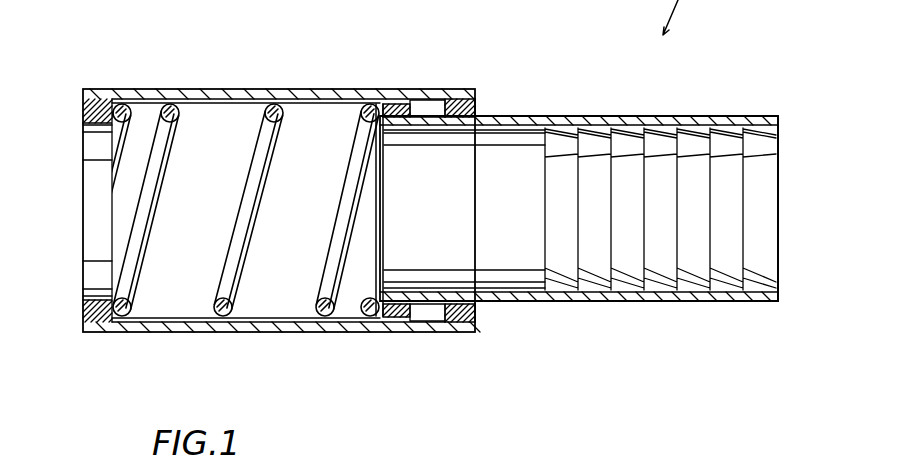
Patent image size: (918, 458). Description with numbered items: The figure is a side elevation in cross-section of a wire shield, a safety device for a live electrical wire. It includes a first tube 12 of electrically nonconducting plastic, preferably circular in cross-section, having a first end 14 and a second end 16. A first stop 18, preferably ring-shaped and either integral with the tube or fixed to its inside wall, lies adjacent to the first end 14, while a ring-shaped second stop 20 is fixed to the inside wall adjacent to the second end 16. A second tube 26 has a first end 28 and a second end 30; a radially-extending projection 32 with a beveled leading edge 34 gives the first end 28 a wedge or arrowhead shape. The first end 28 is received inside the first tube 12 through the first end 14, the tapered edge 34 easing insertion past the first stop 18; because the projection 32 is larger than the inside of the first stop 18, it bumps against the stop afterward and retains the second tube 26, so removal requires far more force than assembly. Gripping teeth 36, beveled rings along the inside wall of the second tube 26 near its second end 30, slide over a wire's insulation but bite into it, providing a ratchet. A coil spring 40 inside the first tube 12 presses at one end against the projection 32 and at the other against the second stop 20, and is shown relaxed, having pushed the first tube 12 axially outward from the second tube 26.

The first tube 12 is at (325, 89).
The first end 14 is at (465, 89).
The second end 16 is at (118, 89).
The first stop 18 is at (475, 110).
The second stop 20 is at (92, 130).
The second tube 26 is at (600, 116).
The first end 28 is at (432, 107).
The second end 30 is at (764, 116).
The radially-extending projection 32 is at (404, 105).
The beveled leading edge 34 is at (382, 312).
The gripping teeth 36 is at (676, 129).
The coil spring 40 is at (260, 128).